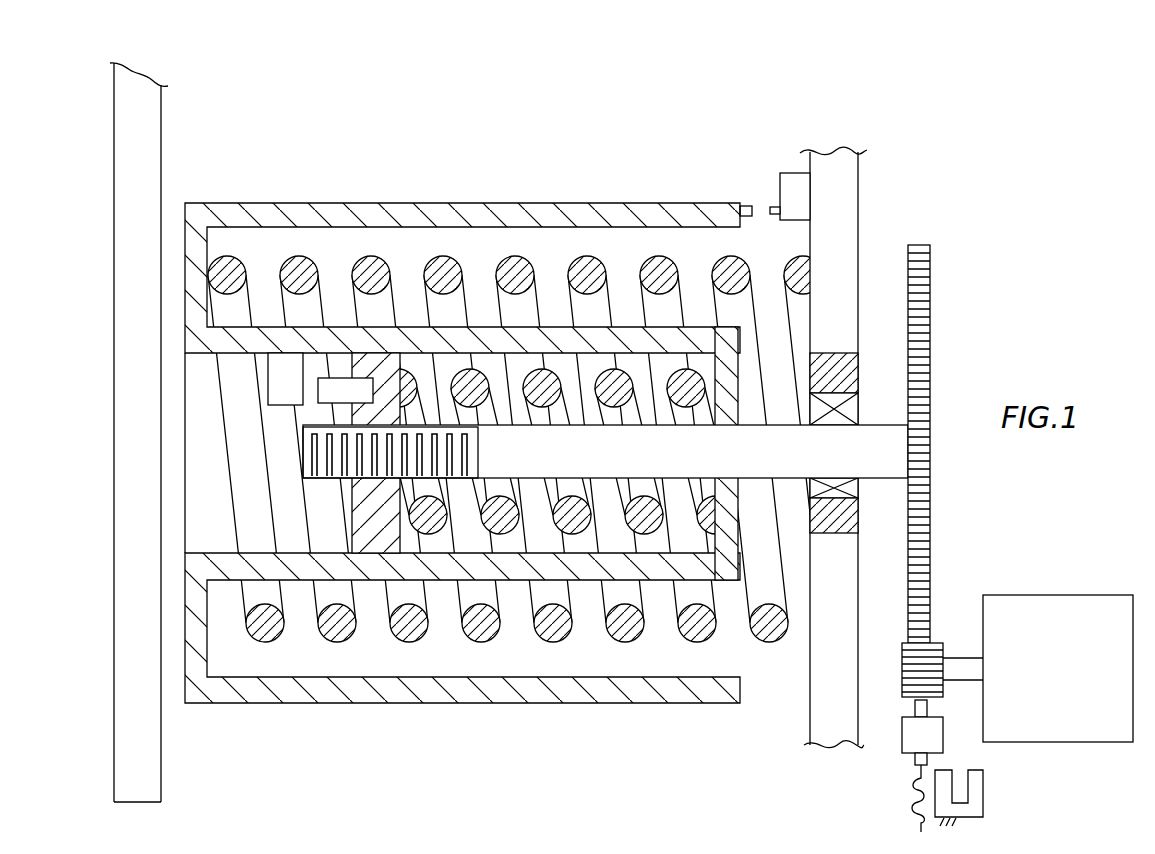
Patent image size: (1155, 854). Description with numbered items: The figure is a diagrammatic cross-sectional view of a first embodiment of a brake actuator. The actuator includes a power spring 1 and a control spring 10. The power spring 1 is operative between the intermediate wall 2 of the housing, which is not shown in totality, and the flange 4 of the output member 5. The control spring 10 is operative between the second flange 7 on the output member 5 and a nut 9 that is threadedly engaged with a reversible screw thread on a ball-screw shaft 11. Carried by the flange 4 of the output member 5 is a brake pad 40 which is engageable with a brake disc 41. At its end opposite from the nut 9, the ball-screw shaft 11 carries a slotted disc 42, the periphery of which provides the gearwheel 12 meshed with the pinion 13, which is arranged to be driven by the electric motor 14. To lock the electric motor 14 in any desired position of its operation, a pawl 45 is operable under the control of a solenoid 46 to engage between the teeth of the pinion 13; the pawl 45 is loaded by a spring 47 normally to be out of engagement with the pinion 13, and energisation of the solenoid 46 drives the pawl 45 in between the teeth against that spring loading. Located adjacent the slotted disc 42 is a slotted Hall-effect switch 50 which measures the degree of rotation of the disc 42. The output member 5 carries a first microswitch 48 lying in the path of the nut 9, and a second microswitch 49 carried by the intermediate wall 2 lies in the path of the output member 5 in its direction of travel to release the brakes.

The power spring 1 is at (503, 454).
The intermediate wall 2 is at (835, 237).
The flange 4 is at (210, 252).
The output member 5 is at (538, 342).
The second flange 7 is at (728, 407).
The nut 9 is at (363, 532).
The control spring 10 is at (590, 412).
The ball-screw shaft 11 is at (296, 466).
The gearwheel 12 is at (932, 631).
The pinion 13 is at (915, 657).
The electric motor 14 is at (1042, 682).
The brake pad 40 is at (170, 658).
The brake disc 41 is at (145, 156).
The slotted disc 42 is at (917, 298).
The pawl 45 is at (913, 709).
The solenoid 46 is at (922, 738).
The spring 47 is at (913, 794).
The first microswitch 48 is at (273, 390).
The second microswitch 49 is at (792, 203).
The slotted Hall-effect switch 50 is at (977, 793).